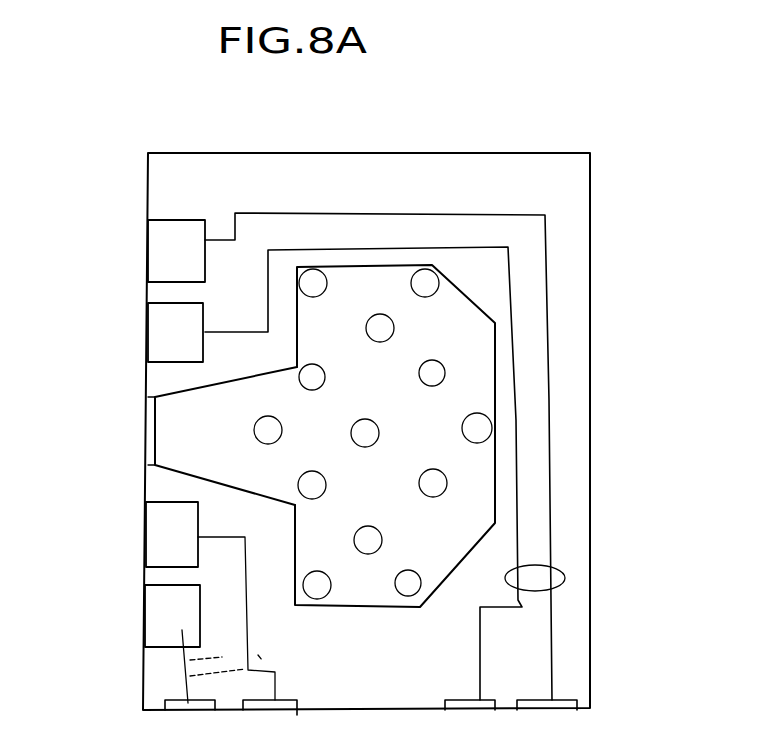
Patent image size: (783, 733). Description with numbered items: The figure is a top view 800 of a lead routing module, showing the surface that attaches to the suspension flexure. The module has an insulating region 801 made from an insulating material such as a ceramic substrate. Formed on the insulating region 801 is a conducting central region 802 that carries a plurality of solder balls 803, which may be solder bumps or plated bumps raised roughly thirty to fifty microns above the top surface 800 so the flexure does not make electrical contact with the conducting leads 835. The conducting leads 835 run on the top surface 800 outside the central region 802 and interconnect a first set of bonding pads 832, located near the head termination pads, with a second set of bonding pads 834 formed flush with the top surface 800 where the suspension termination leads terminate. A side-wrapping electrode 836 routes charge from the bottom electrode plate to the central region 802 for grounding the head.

The top view / top surface 800 is at (653, 145).
The insulating region 801 is at (378, 430).
The conducting central region 802 is at (475, 358).
The solder balls 803 is at (445, 480).
The first set of bonding pads 832 is at (560, 712).
The second set of bonding pads 834 is at (210, 461).
The conducting leads 835 is at (562, 575).
The side-wrapping electrode 836 is at (152, 436).